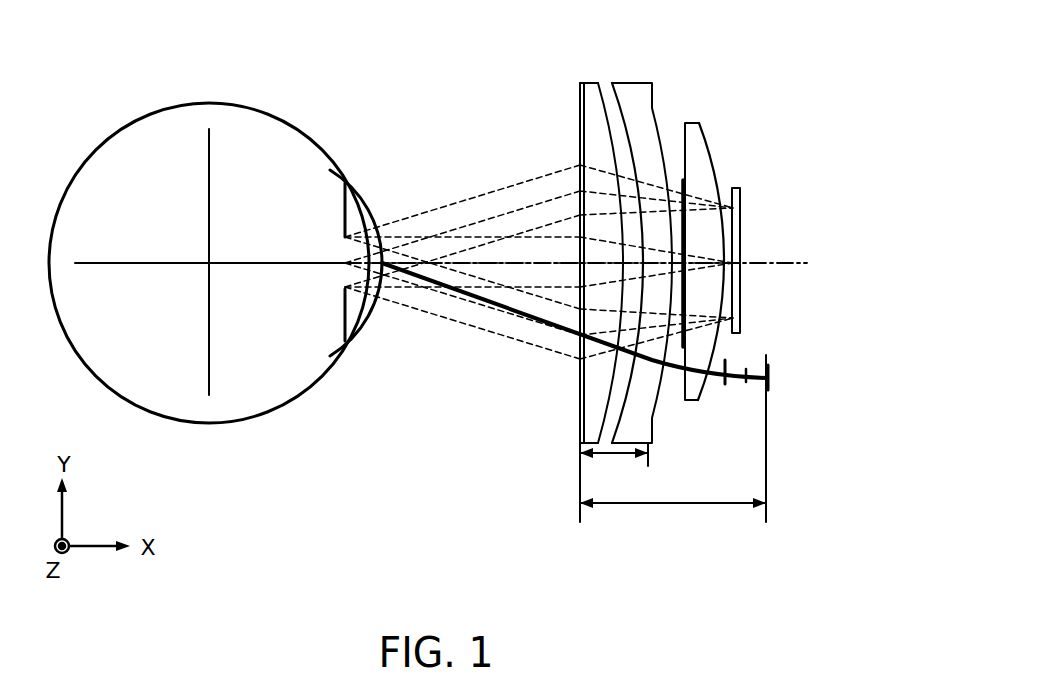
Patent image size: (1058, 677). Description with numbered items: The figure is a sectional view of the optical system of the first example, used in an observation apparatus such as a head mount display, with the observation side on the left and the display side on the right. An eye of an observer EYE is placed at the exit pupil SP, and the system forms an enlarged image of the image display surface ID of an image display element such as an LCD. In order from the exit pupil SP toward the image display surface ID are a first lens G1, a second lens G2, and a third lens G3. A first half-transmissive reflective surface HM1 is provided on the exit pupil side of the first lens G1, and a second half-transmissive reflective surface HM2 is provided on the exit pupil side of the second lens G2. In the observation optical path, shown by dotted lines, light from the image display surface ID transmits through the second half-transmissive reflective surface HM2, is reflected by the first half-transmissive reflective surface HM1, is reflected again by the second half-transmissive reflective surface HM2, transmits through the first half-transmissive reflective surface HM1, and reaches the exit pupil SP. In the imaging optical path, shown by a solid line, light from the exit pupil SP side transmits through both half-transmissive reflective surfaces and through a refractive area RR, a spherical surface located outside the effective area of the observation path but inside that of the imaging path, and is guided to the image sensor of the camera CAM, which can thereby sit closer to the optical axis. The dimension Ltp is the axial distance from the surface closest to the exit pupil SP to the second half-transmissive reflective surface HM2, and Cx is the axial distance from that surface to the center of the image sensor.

The eye of observer EYE is at (292, 373).
The exit pupil SP is at (348, 190).
The first half-transmissive reflective surface HM1 is at (578, 135).
The first lens G1 is at (590, 102).
The second half-transmissive reflective surface HM2 is at (618, 102).
The second lens G2 is at (655, 130).
The third lens G3 is at (717, 165).
The image display surface ID is at (742, 247).
The refractive area RR is at (703, 392).
The camera CAM is at (772, 388).
The distance from surface closest to exit pupil to second half-transmissive reflecti Ltp is at (614, 482).
The distance from surface closest to exit pupil to center of image sensor Cx is at (673, 518).